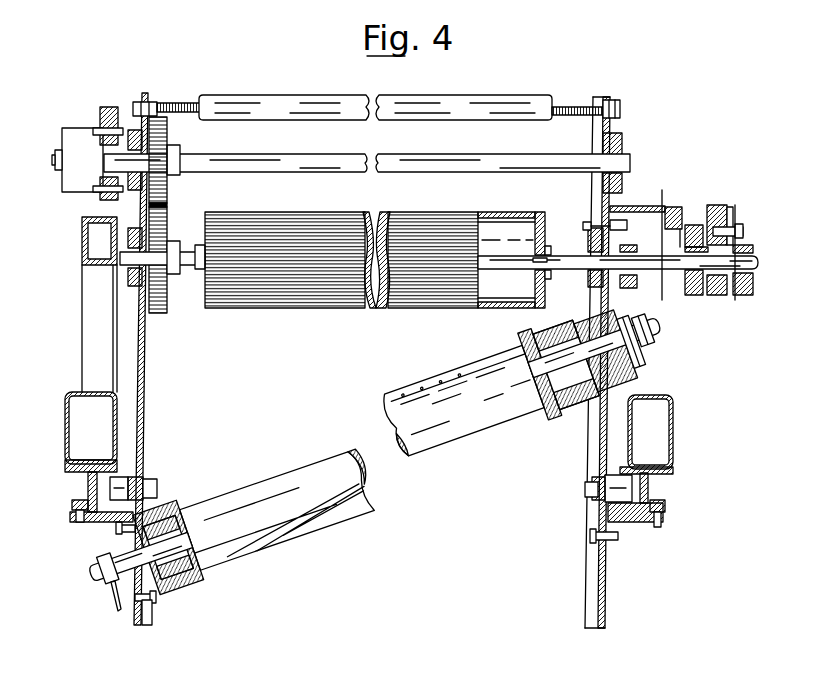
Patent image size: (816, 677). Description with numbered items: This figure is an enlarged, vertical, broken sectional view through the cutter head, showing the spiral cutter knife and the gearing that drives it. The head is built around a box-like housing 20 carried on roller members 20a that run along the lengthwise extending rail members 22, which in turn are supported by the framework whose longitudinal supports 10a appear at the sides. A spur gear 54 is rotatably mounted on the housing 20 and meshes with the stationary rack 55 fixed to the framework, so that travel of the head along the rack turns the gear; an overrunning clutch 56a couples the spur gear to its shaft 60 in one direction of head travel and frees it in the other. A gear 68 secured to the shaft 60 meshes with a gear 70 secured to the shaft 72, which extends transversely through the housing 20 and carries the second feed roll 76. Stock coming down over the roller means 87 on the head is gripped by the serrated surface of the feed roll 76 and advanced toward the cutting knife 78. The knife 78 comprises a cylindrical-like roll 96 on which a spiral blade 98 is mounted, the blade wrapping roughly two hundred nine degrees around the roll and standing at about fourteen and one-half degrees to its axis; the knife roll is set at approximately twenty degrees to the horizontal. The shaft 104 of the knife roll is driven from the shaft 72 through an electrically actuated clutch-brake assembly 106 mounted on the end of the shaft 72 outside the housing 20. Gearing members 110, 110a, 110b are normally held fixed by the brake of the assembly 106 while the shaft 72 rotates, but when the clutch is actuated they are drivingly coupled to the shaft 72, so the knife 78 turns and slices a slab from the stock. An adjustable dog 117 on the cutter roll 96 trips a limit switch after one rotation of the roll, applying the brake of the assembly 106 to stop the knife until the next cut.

The box-like housing 20 is at (612, 103).
The roller members 20a is at (129, 477).
The rail members 22 is at (95, 524).
The longitudinal supports 10a is at (66, 420).
The spur gear 54 is at (120, 127).
The stationary rack 55 is at (110, 107).
The overrunning clutch 56a is at (83, 133).
The shaft 60 is at (243, 157).
The gear 68 is at (169, 131).
The gear 70 is at (167, 308).
The shaft 72 is at (563, 256).
The second feed roll 76 is at (328, 215).
The cutting knife 78 is at (450, 450).
The roller means 87 is at (528, 104).
The cylindrical-like roll 96 is at (489, 424).
The spiral blade 98 is at (270, 568).
The shaft of the knife roll 104 is at (120, 557).
The clutch-brake assembly 106 is at (690, 208).
The gearing member 110 is at (628, 237).
The gearing member 110a is at (657, 322).
The gearing member 110b is at (653, 356).
The adjustable dog 117 is at (111, 613).